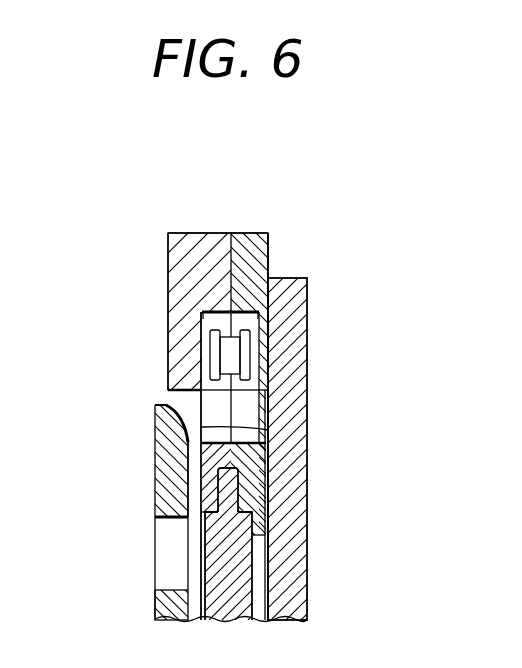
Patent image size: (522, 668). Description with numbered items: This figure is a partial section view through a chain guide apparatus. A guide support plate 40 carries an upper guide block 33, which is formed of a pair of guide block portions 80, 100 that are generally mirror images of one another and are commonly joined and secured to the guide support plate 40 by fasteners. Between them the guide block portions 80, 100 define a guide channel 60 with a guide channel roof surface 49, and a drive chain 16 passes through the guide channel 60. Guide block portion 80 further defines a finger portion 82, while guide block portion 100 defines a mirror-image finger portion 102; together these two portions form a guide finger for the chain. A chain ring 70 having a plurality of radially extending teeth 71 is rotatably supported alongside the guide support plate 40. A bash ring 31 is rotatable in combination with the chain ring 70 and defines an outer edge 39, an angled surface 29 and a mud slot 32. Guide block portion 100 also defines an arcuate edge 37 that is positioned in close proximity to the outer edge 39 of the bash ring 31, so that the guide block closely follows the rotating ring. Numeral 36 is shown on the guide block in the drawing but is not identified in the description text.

The drive chain 16 is at (250, 355).
The angled surface 29 is at (268, 430).
The bash ring 31 is at (160, 605).
The mud slot 32 is at (168, 521).
The upper guide block 33 is at (282, 242).
The housing block 36 is at (205, 232).
The arcuate edge 37 is at (201, 427).
The outer edge 39 is at (161, 404).
The guide support plate 40 is at (310, 395).
The guide channel roof surface 49 is at (200, 322).
The guide channel 60 is at (262, 308).
The chain ring 70 is at (240, 562).
The radially extending teeth 71 is at (240, 483).
The guide block portion 80 is at (250, 232).
The finger portion 82 is at (262, 477).
The guide block portion 100 is at (182, 232).
The finger portion 102 is at (208, 458).